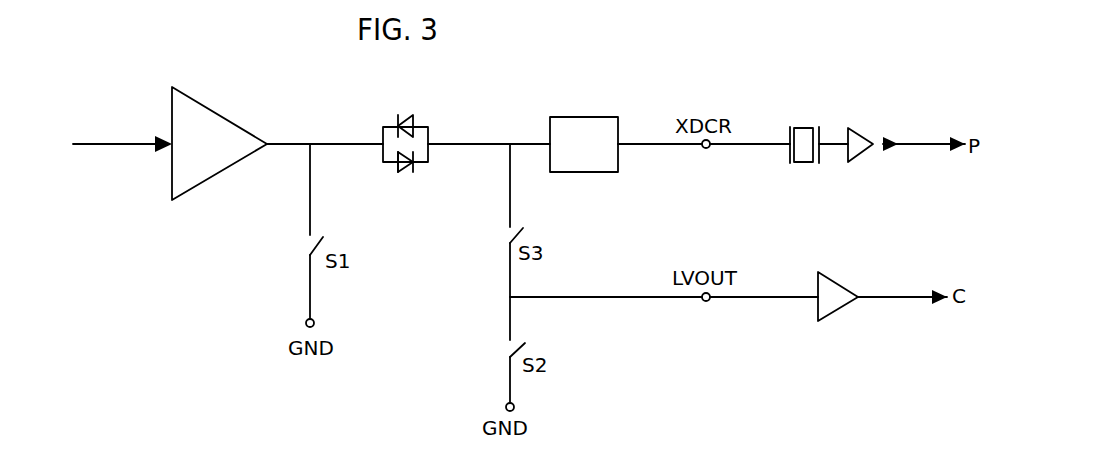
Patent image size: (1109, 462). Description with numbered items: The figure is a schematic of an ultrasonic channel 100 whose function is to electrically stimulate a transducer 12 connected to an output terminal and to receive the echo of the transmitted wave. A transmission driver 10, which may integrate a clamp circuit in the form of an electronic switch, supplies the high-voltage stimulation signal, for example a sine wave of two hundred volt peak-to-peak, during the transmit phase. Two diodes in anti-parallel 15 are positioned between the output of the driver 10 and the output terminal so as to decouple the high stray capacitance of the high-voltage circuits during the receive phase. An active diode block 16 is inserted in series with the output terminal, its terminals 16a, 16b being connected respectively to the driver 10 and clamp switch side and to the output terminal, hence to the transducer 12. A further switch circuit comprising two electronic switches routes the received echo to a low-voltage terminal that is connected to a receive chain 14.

The transmission driver 10 is at (213, 130).
The ultrasonic channel 100 is at (586, 82).
The terminal 16a is at (544, 138).
The active diode block 16 is at (573, 172).
The terminal 16b is at (624, 150).
The transducer 12 is at (804, 118).
The diodes in anti-parallel 15 is at (432, 175).
The receive chain 14 is at (830, 300).